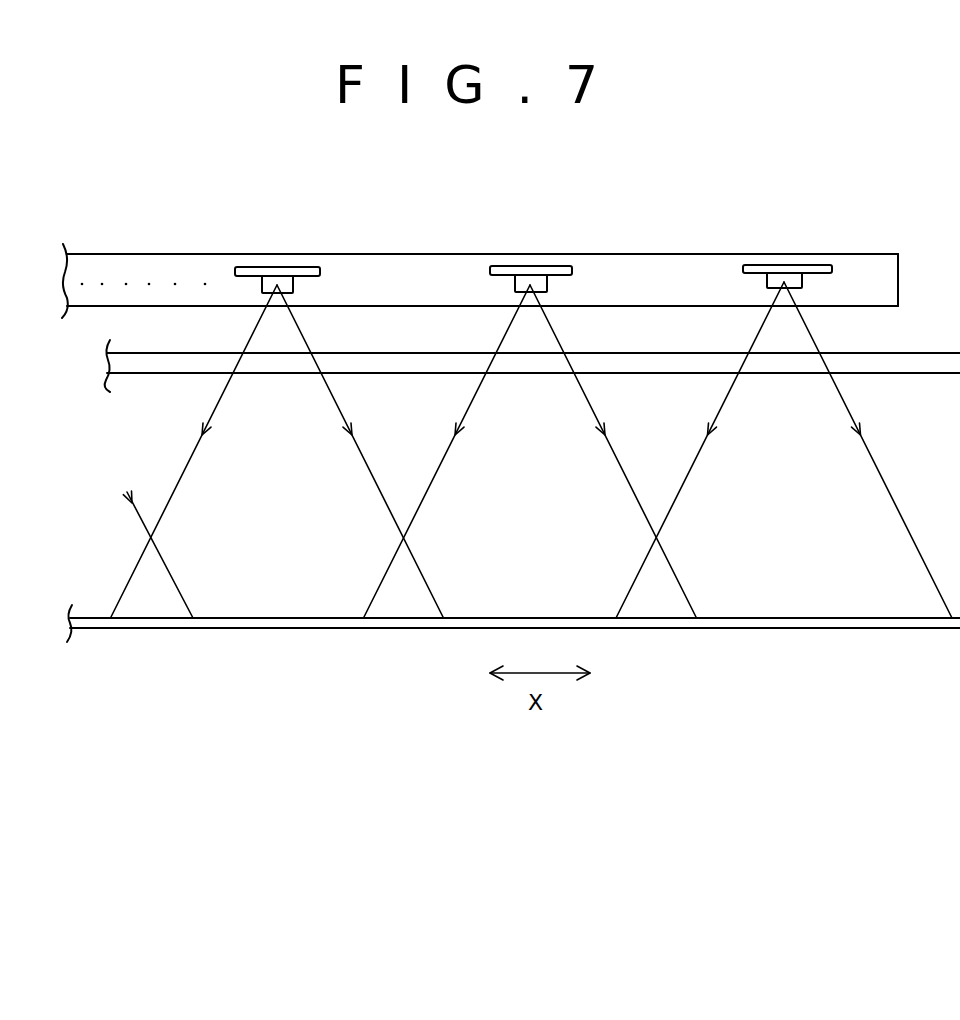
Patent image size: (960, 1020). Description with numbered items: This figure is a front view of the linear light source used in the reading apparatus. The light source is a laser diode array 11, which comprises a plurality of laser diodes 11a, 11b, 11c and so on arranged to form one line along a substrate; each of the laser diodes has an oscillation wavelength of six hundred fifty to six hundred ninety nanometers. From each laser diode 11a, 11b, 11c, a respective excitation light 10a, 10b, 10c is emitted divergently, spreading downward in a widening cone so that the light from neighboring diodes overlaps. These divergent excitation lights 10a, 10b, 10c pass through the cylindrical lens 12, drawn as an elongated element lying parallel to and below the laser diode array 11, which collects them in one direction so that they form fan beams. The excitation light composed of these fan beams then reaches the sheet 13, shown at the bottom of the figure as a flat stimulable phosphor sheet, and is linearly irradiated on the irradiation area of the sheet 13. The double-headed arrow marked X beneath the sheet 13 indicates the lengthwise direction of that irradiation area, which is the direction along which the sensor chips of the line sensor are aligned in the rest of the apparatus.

The laser diode array 11 is at (640, 253).
The laser diode 11a is at (792, 264).
The laser diode 11b is at (522, 265).
The laser diode 11c is at (273, 266).
The excitation light 10a is at (677, 503).
The excitation light 10b is at (418, 513).
The excitation light 10c is at (168, 502).
The cylindrical lens 12 is at (924, 353).
The sheet 13 is at (827, 618).